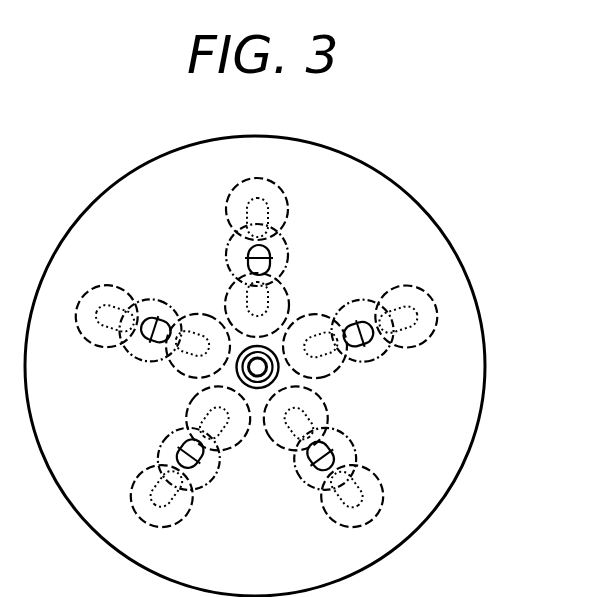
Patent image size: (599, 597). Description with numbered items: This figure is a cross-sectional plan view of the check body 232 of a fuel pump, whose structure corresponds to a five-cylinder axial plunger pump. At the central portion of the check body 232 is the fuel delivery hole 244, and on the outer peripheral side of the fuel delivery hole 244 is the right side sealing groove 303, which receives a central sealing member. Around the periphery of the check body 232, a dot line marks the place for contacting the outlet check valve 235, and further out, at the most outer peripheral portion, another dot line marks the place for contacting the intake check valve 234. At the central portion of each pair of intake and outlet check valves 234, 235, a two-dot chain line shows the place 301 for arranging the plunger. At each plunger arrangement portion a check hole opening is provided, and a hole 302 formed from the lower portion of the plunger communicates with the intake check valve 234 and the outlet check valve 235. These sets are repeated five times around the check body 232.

The check body 232 is at (536, 208).
The intake check valve 234 is at (270, 193).
The place for arranging the plunger 301 is at (288, 243).
The hole 302 is at (250, 263).
The outlet check valve 235 is at (223, 300).
The fuel delivery hole 244 is at (272, 351).
The right side sealing groove 303 is at (257, 388).